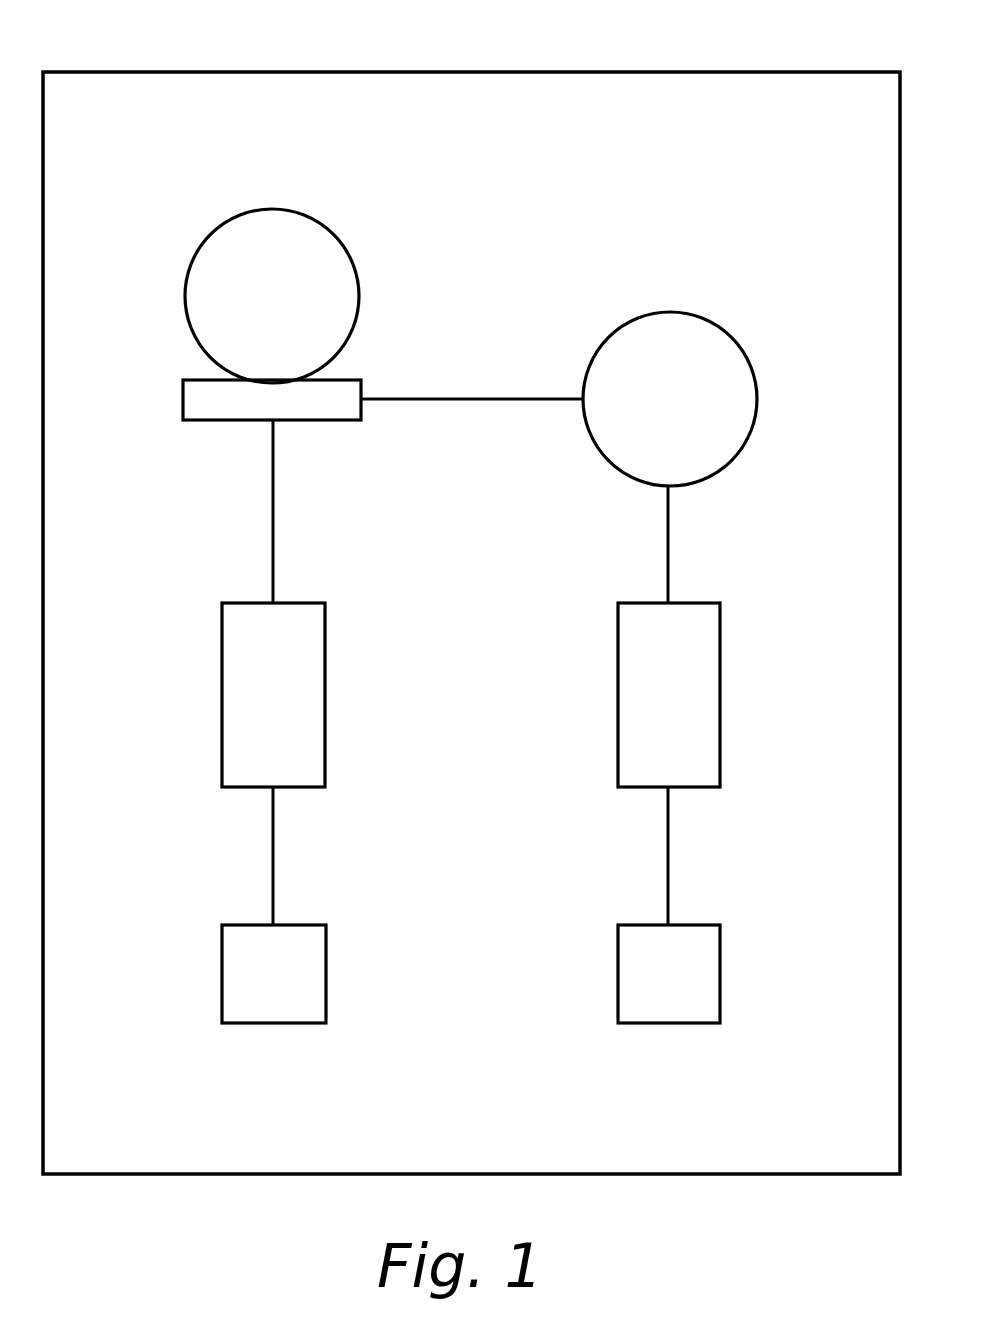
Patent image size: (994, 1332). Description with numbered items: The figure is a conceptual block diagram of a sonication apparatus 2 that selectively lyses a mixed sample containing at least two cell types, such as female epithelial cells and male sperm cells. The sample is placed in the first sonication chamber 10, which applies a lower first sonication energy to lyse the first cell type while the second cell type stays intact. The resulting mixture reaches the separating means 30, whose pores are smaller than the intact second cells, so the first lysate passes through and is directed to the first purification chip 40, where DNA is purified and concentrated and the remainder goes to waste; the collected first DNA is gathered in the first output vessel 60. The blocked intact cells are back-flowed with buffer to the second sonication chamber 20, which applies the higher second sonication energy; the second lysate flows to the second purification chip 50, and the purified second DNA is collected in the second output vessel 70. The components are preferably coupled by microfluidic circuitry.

The sonication apparatus 2 is at (733, 72).
The first sonication chamber 10 is at (330, 222).
The second sonication chamber 20 is at (718, 322).
The separating means 30 is at (183, 396).
The first purification chip 40 is at (325, 679).
The second purification chip 50 is at (720, 688).
The first output vessel 60 is at (326, 962).
The second output vessel 70 is at (720, 970).